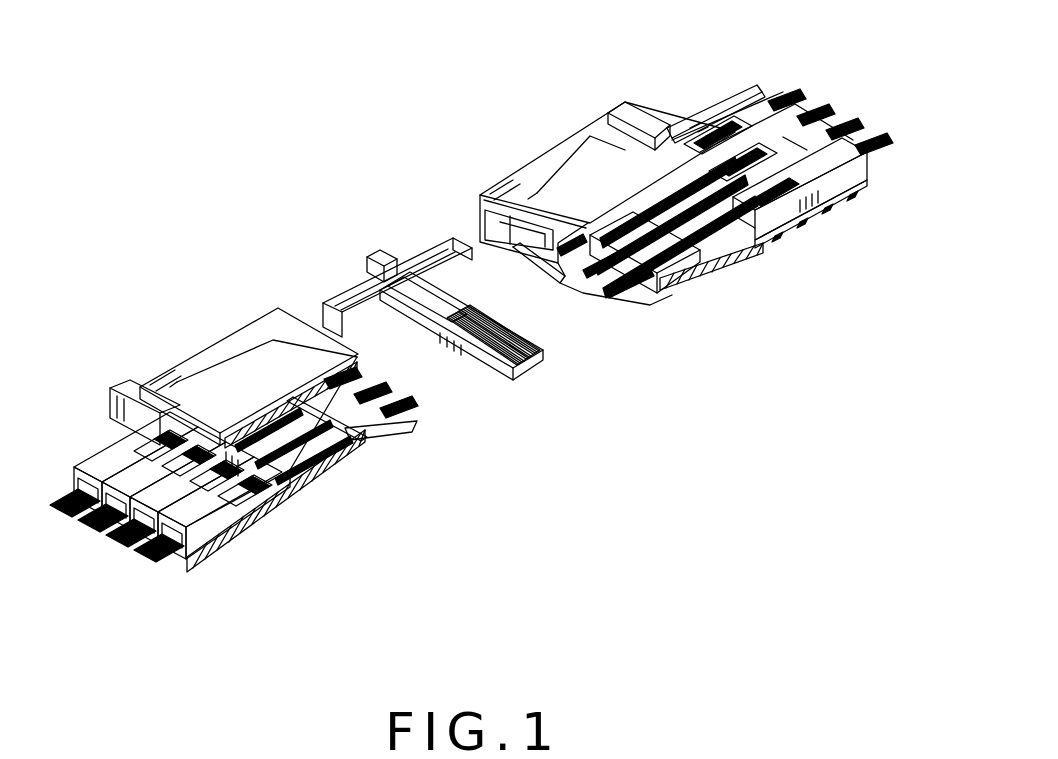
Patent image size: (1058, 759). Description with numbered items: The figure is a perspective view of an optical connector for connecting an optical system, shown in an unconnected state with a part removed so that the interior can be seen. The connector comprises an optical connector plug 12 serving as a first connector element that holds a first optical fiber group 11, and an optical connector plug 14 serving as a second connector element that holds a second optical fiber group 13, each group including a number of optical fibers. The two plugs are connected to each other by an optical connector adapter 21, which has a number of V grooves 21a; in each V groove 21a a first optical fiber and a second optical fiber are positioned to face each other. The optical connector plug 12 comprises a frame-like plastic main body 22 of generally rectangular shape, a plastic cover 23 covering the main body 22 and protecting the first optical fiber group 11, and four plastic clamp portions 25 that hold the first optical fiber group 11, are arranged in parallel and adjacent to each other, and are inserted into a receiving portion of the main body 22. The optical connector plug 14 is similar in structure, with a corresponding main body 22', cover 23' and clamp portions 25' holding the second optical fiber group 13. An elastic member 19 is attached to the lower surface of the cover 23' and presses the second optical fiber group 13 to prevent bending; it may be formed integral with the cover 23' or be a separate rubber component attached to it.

The first optical fiber group 11 is at (890, 148).
The optical connector plug 12 is at (758, 260).
The second optical fiber group 13 is at (140, 553).
The optical connector plug 14 is at (300, 517).
The elastic member 19 is at (258, 395).
The optical connector adapter 21 is at (377, 253).
The V groove 21a is at (543, 365).
The main body 22 is at (711, 296).
The main body 22' is at (305, 501).
The cover 23 is at (607, 169).
The cover 23' is at (263, 312).
The clamp portion 25 is at (778, 142).
The clamp portion 25' is at (167, 482).